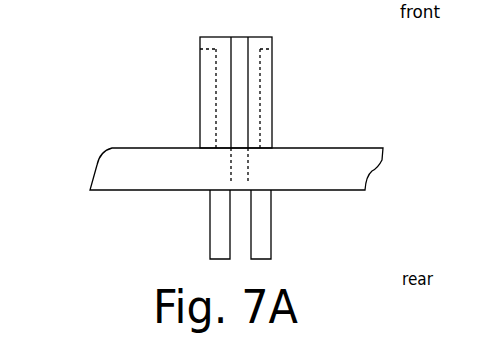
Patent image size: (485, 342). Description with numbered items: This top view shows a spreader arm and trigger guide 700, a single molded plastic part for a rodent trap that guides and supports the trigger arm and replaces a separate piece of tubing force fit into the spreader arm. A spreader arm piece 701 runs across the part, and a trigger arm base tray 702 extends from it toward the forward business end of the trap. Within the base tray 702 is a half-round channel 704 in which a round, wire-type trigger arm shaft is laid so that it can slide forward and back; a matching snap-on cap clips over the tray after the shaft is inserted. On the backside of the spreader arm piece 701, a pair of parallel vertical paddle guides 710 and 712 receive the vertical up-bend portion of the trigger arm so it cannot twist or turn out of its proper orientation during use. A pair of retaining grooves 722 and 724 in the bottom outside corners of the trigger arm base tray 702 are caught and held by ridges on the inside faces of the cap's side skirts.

The spreader arm and trigger guide 700 is at (200, 93).
The spreader arm piece 701 is at (329, 181).
The trigger arm base tray 702 is at (185, 140).
The half-round channel 704 is at (242, 63).
The vertical paddle guide 710 is at (265, 217).
The vertical paddle guide 712 is at (210, 231).
The retaining groove 722 is at (207, 77).
The retaining groove 724 is at (270, 108).